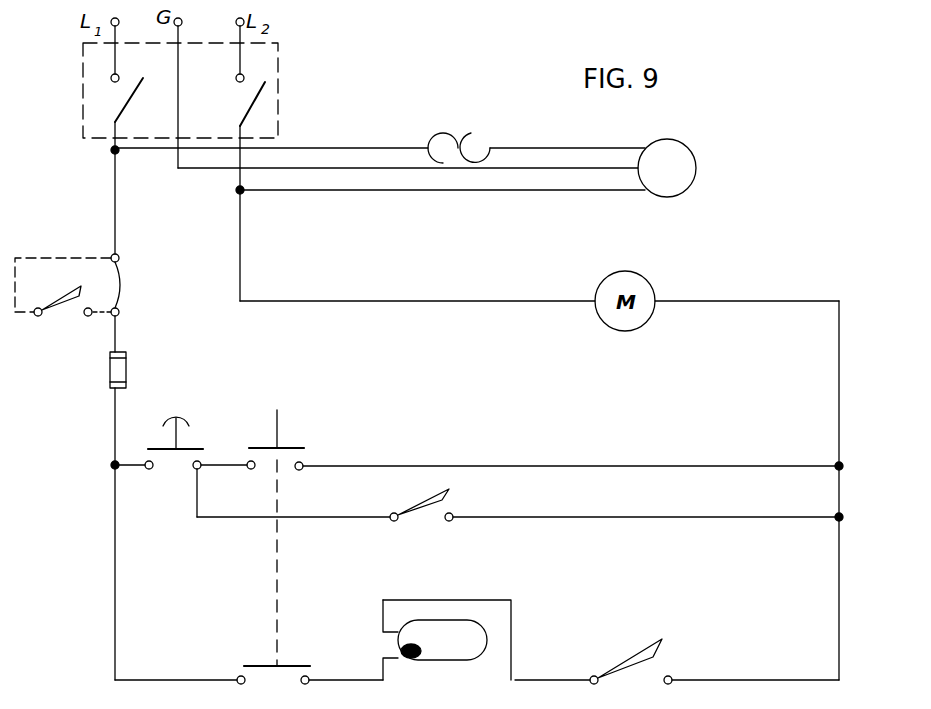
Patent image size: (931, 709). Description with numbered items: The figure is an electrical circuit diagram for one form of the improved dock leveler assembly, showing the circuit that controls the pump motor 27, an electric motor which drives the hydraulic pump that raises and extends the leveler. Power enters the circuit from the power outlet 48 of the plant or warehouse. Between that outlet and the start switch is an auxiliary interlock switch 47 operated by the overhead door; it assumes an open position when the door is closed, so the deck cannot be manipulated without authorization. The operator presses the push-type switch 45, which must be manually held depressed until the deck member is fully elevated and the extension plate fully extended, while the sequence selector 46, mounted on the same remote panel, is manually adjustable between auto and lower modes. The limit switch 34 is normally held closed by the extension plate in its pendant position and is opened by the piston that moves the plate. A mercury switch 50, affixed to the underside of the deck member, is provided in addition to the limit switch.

The electric motor 27 is at (703, 145).
The limit switch 34 is at (619, 640).
The push-type switch 45 is at (233, 386).
The sequence selector 46 is at (360, 398).
The auxiliary interlock switch 47 is at (72, 333).
The power outlet 48 is at (64, 125).
The mercury switch 50 is at (411, 607).